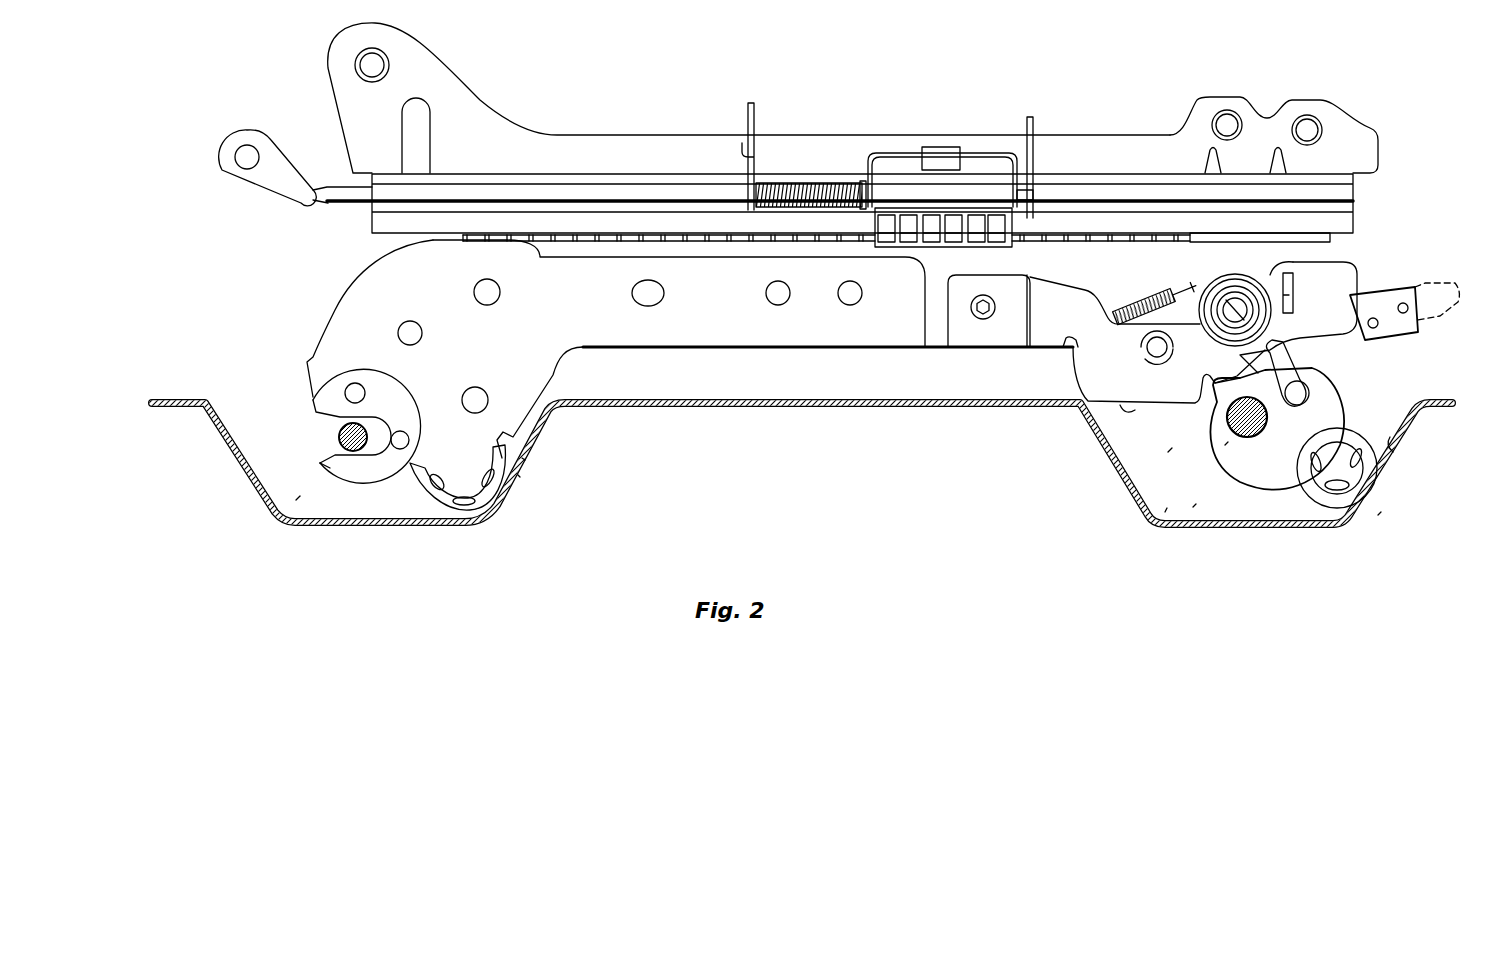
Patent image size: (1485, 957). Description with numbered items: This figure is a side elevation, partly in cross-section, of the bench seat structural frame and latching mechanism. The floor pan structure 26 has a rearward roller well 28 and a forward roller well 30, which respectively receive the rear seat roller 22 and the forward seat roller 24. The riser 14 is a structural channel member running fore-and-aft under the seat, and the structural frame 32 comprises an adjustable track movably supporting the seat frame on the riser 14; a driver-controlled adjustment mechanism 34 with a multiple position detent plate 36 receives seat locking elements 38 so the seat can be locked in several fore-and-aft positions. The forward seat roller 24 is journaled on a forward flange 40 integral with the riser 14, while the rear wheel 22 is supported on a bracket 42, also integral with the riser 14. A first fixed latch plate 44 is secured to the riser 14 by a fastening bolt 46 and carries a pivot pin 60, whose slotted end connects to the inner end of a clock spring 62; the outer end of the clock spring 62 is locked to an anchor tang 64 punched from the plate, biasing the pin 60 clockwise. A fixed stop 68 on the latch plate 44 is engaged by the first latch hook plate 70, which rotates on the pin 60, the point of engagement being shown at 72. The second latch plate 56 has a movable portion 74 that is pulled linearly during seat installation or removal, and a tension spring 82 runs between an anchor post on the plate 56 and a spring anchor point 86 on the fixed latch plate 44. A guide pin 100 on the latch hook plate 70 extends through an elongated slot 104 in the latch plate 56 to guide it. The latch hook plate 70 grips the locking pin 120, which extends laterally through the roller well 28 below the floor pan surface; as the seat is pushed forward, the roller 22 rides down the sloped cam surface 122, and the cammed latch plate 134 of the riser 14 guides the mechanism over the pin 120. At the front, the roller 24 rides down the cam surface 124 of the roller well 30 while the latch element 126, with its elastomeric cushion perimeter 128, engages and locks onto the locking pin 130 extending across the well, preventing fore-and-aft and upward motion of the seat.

The riser 14 is at (822, 335).
The rear seat roller 22 is at (1330, 518).
The forward seat roller 24 is at (518, 512).
The floor pan structure 26 is at (200, 400).
The rearward roller well 28 is at (1225, 445).
The forward roller well 30 is at (300, 496).
The structural frame 32 is at (663, 170).
The driver-controlled adjustment mechanism 34 is at (1008, 207).
The multiple position detent plate 36 is at (660, 237).
The seat locking elements 38 is at (1010, 230).
The forward flange 40 is at (520, 477).
The bracket 42 is at (1378, 515).
The first fixed latch plate 44 is at (1227, 330).
The fastening bolt 46 is at (983, 313).
The second latch plate 56 is at (1310, 347).
The pivot pin 60 is at (1252, 285).
The clock spring 62 is at (1170, 450).
The anchor tang 64 is at (1312, 275).
The fixed stop 68 is at (1195, 507).
The first latch hook plate 70 is at (1277, 447).
The point of engagement 72 is at (1240, 447).
The movable portion 74 is at (1405, 337).
The tension spring 82 is at (1165, 300).
The spring anchor point 86 is at (1070, 340).
The guide pin 100 is at (1298, 405).
The elongated slot 104 is at (1302, 392).
The locking pin 120 is at (1253, 440).
The sloped cam surface 122 is at (1397, 460).
The cam surface 124 is at (525, 460).
The latch element 126 is at (373, 487).
The elastomeric cushion perimeter 128 is at (370, 447).
The locking pin 130 is at (340, 435).
The cammed latch plate 134 is at (1167, 510).